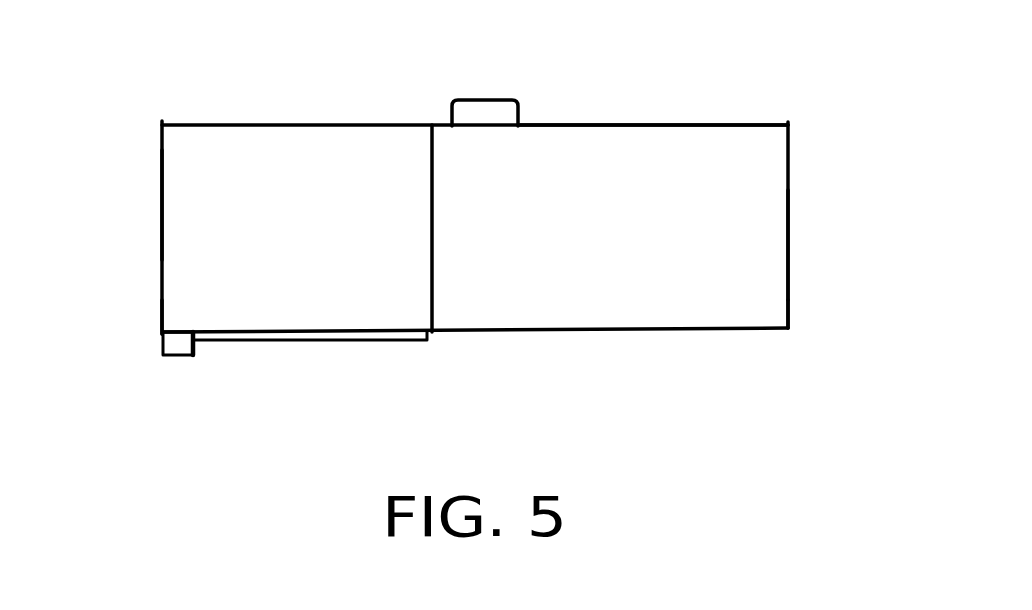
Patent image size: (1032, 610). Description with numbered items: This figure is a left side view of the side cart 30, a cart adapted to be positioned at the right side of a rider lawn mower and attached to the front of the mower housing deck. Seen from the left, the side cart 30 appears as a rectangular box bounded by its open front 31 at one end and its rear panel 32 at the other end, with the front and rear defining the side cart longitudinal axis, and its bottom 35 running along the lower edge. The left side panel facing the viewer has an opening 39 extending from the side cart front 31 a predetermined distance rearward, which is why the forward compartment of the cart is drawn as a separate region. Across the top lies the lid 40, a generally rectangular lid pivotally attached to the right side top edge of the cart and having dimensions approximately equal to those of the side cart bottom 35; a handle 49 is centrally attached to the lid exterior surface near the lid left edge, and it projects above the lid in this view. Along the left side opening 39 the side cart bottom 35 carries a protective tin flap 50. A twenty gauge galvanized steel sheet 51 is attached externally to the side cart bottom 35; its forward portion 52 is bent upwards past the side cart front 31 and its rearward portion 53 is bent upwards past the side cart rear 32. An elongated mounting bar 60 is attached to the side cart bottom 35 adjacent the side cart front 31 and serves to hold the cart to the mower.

The side cart 30 is at (788, 152).
The open front 31 is at (163, 200).
The rear panel 32 is at (788, 240).
The bottom 35 is at (468, 332).
The opening 39 is at (316, 247).
The lid 40 is at (638, 126).
The handle 49 is at (485, 98).
The protective tin flap 50 is at (312, 335).
The galvanized steel sheet 51 is at (160, 332).
The forward portion 52 is at (153, 335).
The rearward portion 53 is at (815, 300).
The mounting bar 60 is at (167, 358).